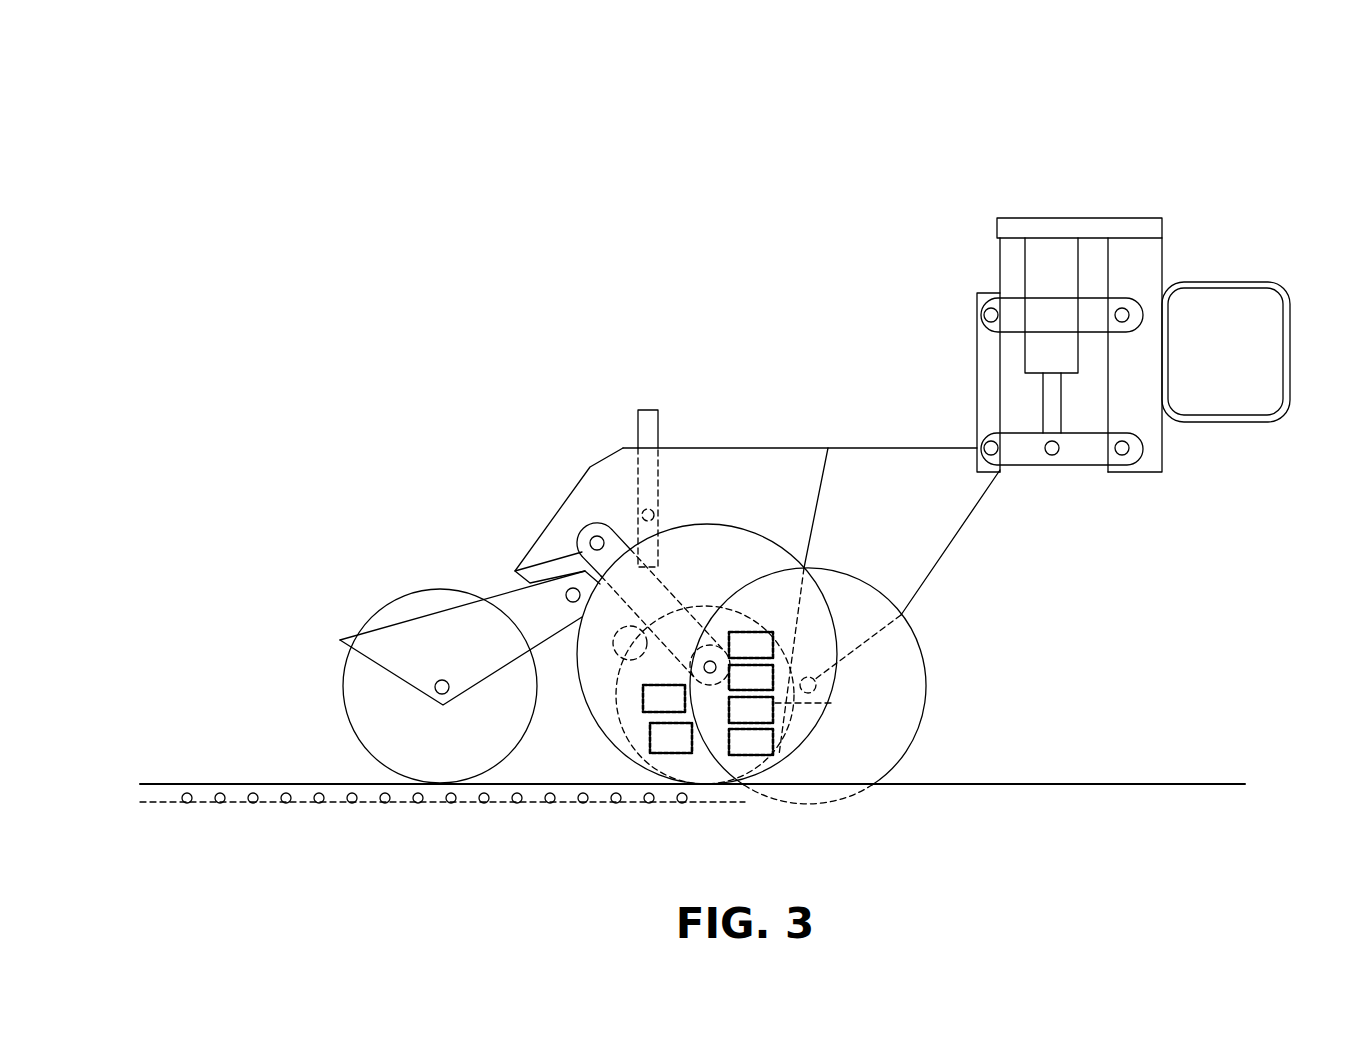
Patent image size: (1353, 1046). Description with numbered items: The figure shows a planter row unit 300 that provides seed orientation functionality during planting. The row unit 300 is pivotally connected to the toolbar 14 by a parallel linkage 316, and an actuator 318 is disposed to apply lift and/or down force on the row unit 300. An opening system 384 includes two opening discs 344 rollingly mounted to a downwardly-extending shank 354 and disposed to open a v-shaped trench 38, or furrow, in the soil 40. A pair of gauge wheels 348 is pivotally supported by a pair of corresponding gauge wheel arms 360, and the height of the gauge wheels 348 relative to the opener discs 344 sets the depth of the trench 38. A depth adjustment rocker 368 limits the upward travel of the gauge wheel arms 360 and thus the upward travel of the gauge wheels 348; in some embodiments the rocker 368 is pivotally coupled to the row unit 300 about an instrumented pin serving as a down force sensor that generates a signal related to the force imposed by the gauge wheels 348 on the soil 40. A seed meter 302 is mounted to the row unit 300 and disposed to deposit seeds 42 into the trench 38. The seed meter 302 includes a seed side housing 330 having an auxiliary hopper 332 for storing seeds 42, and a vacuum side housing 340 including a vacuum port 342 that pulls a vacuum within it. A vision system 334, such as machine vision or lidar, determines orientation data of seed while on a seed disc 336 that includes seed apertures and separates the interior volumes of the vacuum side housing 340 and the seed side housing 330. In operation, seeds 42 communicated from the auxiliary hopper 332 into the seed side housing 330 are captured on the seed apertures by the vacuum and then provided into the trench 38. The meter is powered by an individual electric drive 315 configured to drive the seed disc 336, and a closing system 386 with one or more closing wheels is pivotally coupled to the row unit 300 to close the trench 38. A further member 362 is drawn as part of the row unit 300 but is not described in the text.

The row unit 300 is at (1054, 160).
The toolbar 14 is at (1290, 363).
The parallel linkage 316 is at (1080, 466).
The actuator 318 is at (1033, 277).
The depth adjustment rocker 368 is at (637, 497).
The seed meter 302 is at (697, 606).
The strut 362 is at (843, 537).
The gauge wheel arm 360 is at (515, 571).
The shank 354 is at (958, 530).
The closing system 386 is at (312, 622).
The opening system 384 is at (1008, 640).
The electric drive 315 is at (579, 672).
The gauge wheel 348 is at (622, 654).
The seed side housing 330 is at (734, 657).
The auxiliary hopper 332 is at (734, 689).
The vacuum port 342 is at (734, 721).
The vacuum side housing 340 is at (734, 753).
The vision system 334 is at (647, 710).
The seed disc 336 is at (654, 749).
The opening disc 344 is at (843, 757).
The soil 40 is at (1125, 783).
The seeds 42 is at (603, 803).
The trench 38 is at (703, 803).